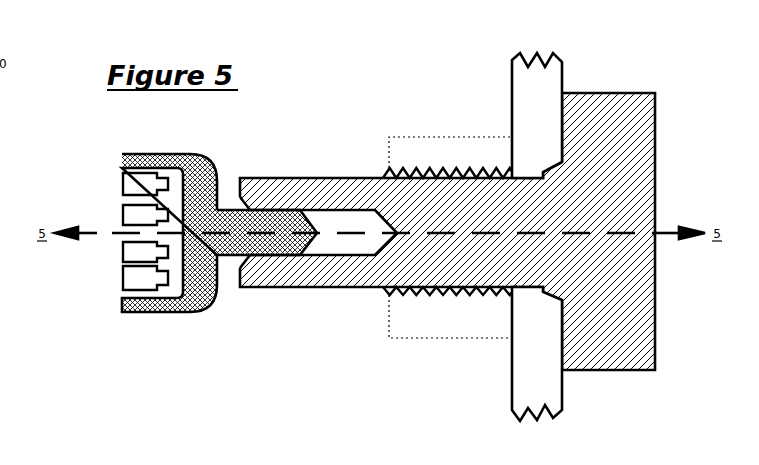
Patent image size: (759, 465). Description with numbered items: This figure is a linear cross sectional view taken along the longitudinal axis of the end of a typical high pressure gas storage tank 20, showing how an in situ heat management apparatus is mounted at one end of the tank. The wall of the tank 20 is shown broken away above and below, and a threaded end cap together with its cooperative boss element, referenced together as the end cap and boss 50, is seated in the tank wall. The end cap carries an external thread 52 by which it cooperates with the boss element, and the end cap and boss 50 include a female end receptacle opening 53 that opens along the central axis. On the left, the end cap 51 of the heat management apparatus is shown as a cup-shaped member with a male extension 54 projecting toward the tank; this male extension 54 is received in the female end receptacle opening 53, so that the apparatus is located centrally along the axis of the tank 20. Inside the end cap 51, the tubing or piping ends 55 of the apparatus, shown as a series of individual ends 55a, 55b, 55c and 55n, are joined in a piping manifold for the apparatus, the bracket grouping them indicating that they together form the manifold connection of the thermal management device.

The high pressure gas storage tank 20 is at (538, 93).
The end cap and boss element 50 is at (420, 137).
The end cap of heat management apparatus 51 is at (205, 308).
The thread 52 is at (385, 290).
The female end receptacle opening 53 is at (351, 233).
The male extension 54 is at (265, 228).
The tubing or piping ends 55 is at (107, 282).
The tubing or piping end 55a is at (122, 185).
The tubing or piping end 55b is at (122, 212).
The tubing or piping end 55c is at (122, 252).
The tubing or piping end 55n is at (110, 294).